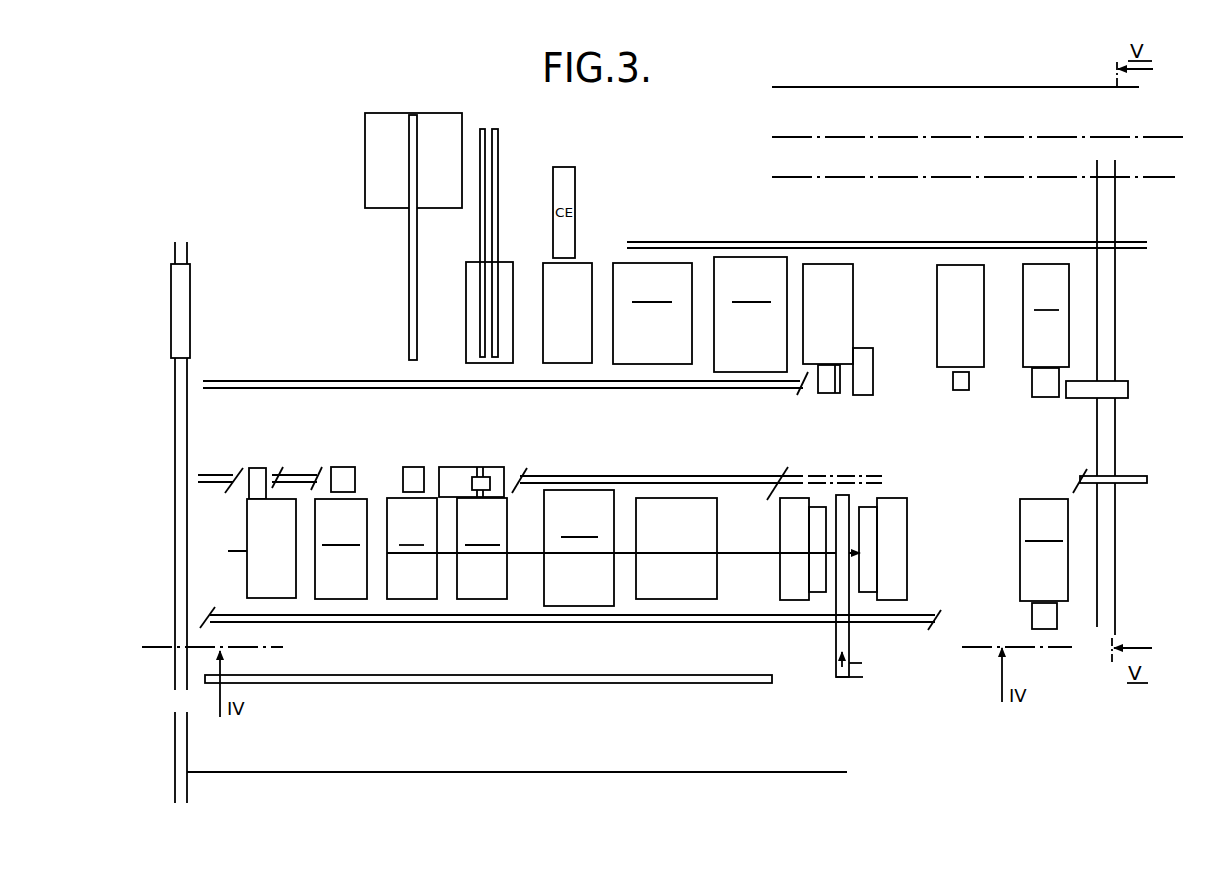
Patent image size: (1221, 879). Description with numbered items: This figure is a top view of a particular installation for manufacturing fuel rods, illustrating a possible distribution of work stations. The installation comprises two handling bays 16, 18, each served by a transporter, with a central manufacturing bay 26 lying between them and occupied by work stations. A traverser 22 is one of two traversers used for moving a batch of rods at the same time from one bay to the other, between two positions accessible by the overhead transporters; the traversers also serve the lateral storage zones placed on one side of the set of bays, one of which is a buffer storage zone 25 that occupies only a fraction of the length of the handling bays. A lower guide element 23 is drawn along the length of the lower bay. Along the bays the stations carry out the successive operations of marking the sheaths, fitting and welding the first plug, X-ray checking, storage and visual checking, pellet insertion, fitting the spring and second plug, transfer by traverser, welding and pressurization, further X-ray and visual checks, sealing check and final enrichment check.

The handling bay 16 is at (978, 567).
The handling bay 18 is at (902, 326).
The traverser 22 is at (190, 307).
The lower guide rail 23 is at (414, 726).
The buffer storage zone 25 is at (965, 124).
The central manufacturing bay 26 is at (652, 437).